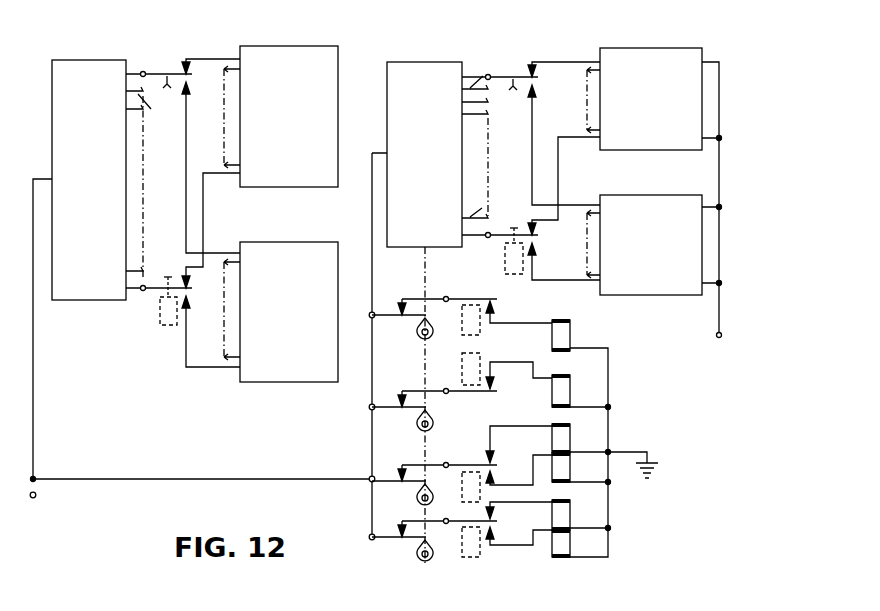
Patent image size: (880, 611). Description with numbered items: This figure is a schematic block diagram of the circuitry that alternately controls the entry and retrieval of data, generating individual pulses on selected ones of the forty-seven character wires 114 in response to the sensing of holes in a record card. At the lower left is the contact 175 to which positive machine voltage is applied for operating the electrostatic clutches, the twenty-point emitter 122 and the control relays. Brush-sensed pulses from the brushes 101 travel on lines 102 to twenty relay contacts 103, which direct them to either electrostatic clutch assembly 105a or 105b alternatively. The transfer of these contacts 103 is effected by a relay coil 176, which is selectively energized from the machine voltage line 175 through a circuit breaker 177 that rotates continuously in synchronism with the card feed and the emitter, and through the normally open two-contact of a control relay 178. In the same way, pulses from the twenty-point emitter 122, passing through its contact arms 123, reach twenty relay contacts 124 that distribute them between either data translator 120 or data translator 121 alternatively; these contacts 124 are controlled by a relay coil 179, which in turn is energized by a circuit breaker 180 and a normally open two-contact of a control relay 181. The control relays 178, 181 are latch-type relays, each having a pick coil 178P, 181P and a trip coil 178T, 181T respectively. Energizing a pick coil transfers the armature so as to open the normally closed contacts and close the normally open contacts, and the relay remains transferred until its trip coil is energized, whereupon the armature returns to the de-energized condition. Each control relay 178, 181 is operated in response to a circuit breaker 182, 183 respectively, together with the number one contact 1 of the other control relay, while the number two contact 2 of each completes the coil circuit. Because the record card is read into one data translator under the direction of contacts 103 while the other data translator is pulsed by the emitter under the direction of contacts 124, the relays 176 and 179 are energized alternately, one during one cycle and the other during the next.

The brushes 101 is at (79, 194).
The lines 102 is at (137, 111).
The relay contacts 103 is at (184, 71).
The electrostatic clutch assembly 105a is at (276, 165).
The electrostatic clutch assembly 105b is at (276, 338).
The character wires 114 is at (720, 322).
The data translator 120 is at (641, 144).
The data translator 121 is at (641, 290).
The 20-point emitter 122 is at (414, 207).
The emitter contact arms 123 is at (500, 139).
The relay contacts 124 is at (524, 69).
The contact 175 is at (36, 495).
The relay coil 176 is at (160, 318).
The circuit breaker 177 is at (411, 330).
The control relay 178 is at (480, 330).
The relay coil 179 is at (505, 263).
The circuit breaker 180 is at (411, 422).
The control relay 181 is at (480, 355).
The circuit breaker 182 is at (411, 552).
The circuit breaker 183 is at (411, 496).
The trip coil 181T is at (570, 437).
The pick coil 181P is at (570, 467).
The pick coil 178P is at (570, 513).
The trip coil 178T is at (570, 544).
The number one contact 1 is at (494, 467).
The 2-contact 2 is at (494, 304).